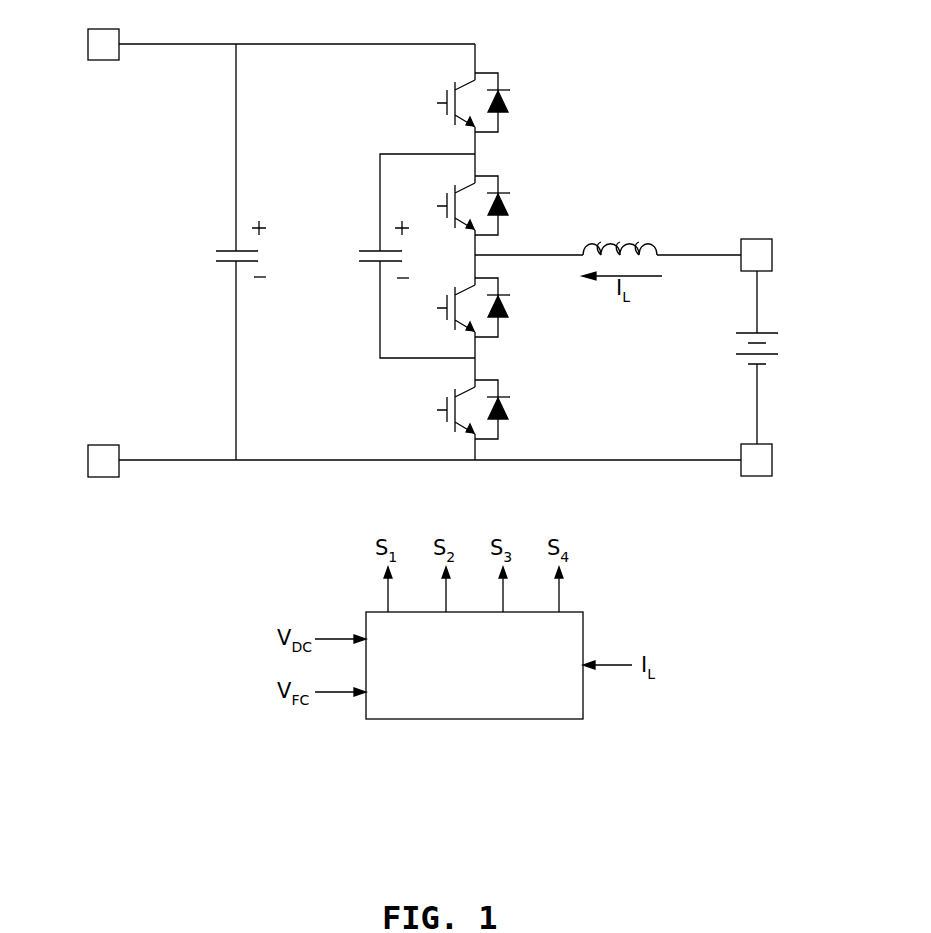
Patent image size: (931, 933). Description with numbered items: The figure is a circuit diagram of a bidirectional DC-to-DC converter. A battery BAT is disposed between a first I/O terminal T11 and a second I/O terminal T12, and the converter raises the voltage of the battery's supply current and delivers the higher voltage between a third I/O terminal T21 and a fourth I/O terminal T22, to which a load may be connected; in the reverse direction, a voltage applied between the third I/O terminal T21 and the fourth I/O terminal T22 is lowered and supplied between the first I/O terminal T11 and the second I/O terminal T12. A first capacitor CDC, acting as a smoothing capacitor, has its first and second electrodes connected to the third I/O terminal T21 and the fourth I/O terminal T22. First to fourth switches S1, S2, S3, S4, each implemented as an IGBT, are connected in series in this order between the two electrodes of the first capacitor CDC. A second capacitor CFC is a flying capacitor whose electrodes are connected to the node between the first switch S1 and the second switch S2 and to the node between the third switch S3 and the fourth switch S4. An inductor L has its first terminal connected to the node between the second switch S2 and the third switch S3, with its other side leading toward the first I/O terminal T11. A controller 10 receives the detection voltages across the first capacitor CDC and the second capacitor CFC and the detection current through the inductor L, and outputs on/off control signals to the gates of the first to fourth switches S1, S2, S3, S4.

The controller 10 is at (474, 719).
The third I/O terminal T21 is at (80, 44).
The fourth I/O terminal T22 is at (80, 461).
The first I/O terminal T11 is at (782, 255).
The second I/O terminal T12 is at (782, 460).
The first capacitor CDC is at (243, 252).
The second capacitor CFC is at (402, 256).
The first switch S1 is at (489, 102).
The second switch S2 is at (489, 205).
The third switch S3 is at (489, 307).
The fourth switch S4 is at (489, 409).
The inductor L is at (620, 236).
The battery BAT is at (782, 357).